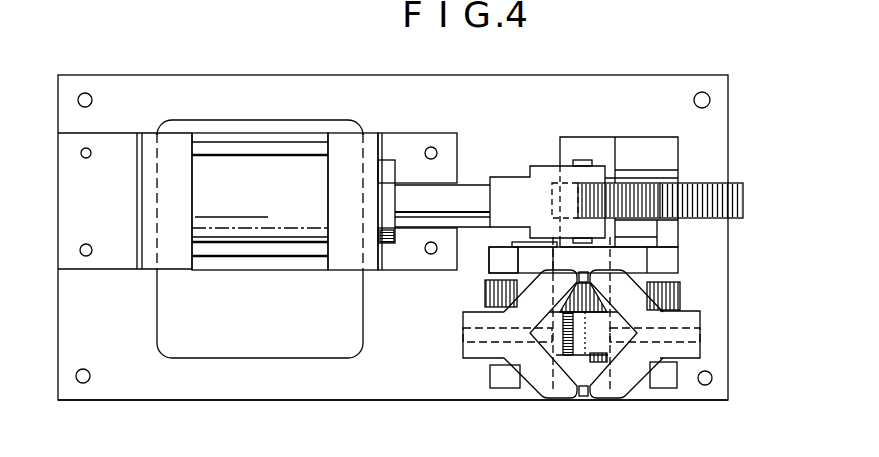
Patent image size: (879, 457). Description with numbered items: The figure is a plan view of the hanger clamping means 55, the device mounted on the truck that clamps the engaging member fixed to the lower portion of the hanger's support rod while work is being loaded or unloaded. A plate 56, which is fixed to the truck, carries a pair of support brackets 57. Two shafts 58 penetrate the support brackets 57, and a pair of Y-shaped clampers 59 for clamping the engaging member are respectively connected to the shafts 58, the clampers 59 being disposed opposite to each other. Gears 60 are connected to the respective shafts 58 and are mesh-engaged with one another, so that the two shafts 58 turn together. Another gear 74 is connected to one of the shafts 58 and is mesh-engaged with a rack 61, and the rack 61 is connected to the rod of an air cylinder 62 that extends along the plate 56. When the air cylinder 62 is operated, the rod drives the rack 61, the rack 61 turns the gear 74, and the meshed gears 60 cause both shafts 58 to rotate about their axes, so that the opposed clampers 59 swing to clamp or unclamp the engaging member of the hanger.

The hanger clamping means 55 is at (650, 402).
The plate 56 is at (394, 388).
The support brackets 57 is at (665, 268).
The shafts 58 is at (516, 263).
The Y-shaped clampers 59 is at (535, 400).
The gears 60 is at (466, 313).
The rack 61 is at (732, 197).
The air cylinder 62 is at (242, 172).
The gear 74 is at (637, 200).